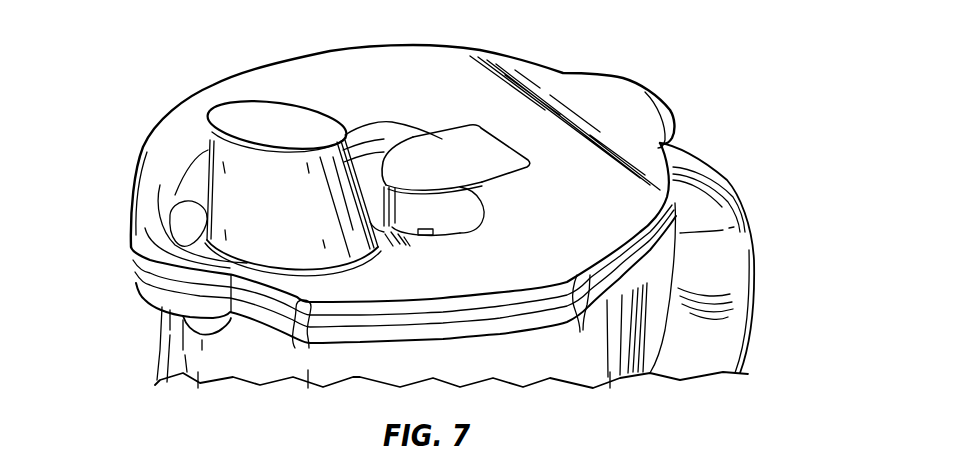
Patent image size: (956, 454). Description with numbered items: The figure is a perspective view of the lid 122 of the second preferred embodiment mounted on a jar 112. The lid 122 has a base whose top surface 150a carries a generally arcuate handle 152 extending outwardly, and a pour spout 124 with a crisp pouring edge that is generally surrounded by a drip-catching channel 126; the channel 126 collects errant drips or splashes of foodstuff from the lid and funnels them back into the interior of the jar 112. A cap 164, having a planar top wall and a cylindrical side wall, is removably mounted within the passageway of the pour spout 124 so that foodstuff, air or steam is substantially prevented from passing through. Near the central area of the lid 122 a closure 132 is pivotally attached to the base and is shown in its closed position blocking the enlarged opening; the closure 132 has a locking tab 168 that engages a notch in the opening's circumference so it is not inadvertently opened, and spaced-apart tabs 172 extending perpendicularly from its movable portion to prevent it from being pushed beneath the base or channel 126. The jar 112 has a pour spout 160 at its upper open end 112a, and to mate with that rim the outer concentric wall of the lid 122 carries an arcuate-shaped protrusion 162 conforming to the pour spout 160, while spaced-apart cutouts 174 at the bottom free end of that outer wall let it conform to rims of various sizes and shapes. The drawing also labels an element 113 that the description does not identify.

The lid 122 is at (585, 49).
The top surface 150a is at (447, 50).
The handle 152 is at (633, 83).
The cap 164 is at (247, 118).
The drip-catching channel 126 is at (356, 163).
The pour spout 124 is at (232, 189).
The arcuate-shaped protrusion 162 is at (143, 272).
The pour spout 160 is at (200, 325).
The cutouts 174 is at (300, 335).
The jar 112 is at (205, 385).
The upper open end 112a is at (318, 380).
The handle 113 is at (745, 262).
The closure 132 is at (437, 212).
The tabs 172 is at (433, 234).
The locking tab 168 is at (392, 242).